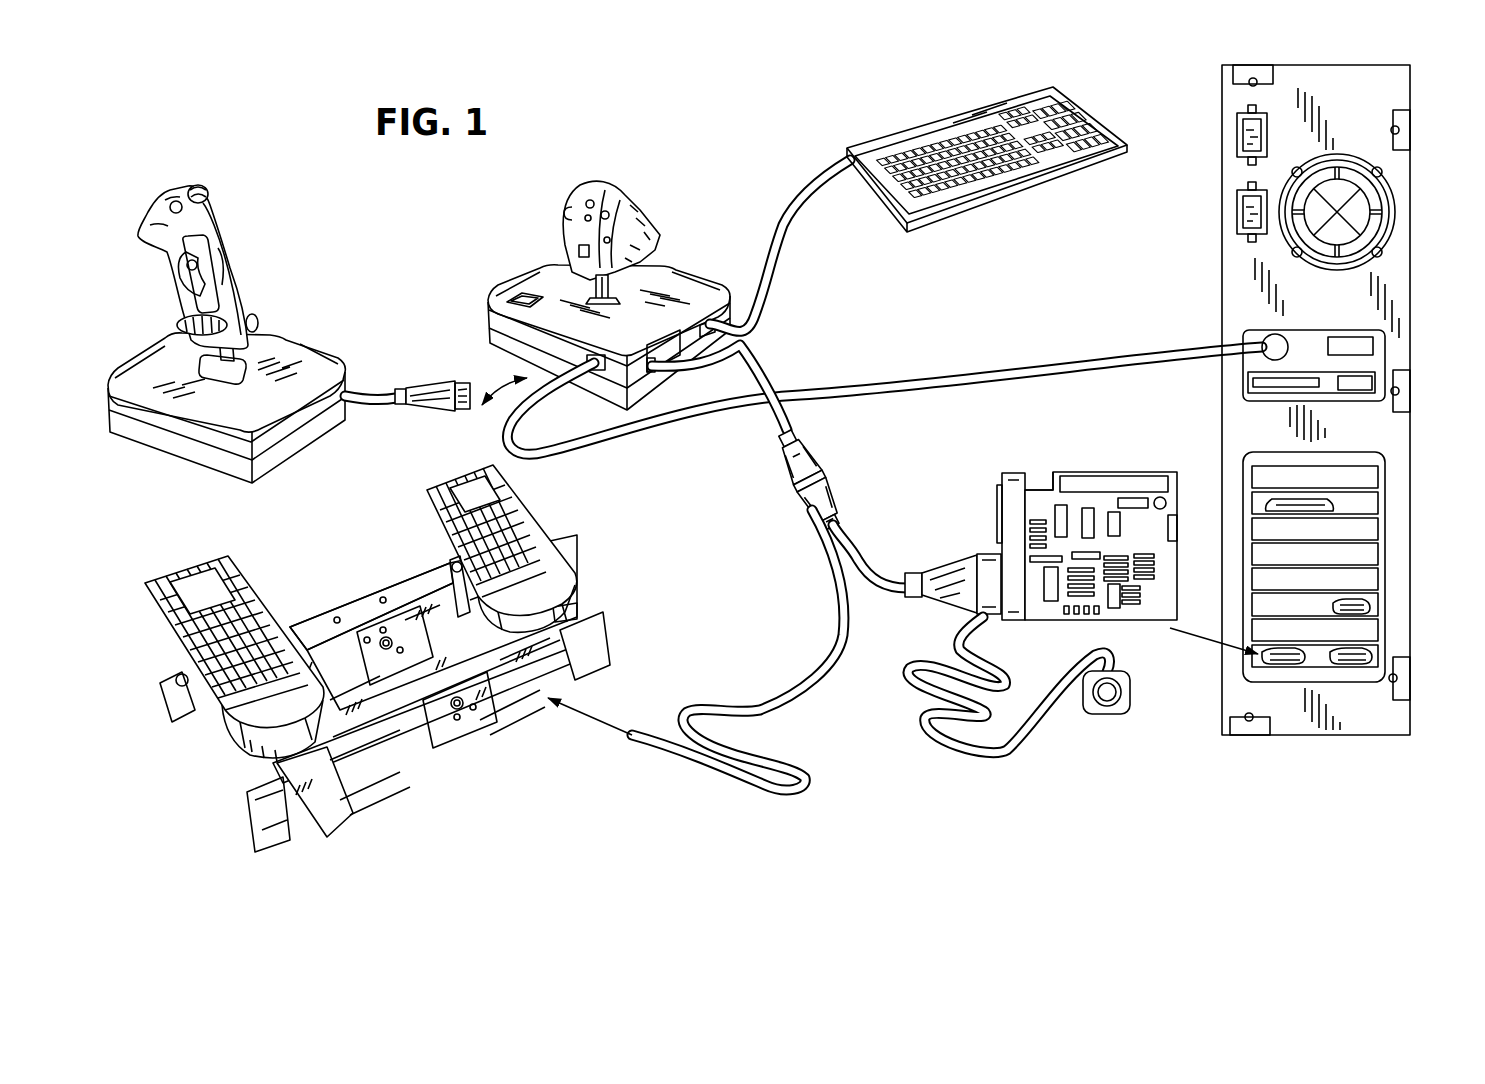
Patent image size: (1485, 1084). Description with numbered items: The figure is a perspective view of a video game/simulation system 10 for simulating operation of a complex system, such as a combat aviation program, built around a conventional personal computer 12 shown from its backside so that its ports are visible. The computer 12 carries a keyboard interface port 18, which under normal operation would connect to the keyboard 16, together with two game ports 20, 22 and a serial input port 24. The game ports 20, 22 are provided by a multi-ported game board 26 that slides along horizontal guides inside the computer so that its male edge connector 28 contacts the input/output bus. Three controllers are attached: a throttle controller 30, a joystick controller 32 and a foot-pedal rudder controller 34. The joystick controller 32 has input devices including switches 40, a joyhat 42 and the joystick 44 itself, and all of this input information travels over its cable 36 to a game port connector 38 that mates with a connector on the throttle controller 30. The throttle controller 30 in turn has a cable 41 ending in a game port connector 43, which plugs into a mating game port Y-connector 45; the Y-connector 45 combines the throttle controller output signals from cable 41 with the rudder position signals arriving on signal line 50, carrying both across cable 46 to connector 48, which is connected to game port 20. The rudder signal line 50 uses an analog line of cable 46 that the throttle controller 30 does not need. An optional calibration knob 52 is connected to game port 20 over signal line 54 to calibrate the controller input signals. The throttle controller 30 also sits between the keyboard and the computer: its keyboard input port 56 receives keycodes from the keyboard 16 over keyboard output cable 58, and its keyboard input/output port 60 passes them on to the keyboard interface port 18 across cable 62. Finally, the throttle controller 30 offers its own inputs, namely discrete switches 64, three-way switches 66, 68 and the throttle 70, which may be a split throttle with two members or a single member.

The video game/simulation system 10 is at (140, 558).
The personal computer 12 is at (1296, 737).
The keyboard 16 is at (948, 113).
The keyboard interface port 18 is at (1255, 340).
The game port 20 is at (952, 586).
The game port 22 is at (998, 514).
The serial input port 24 is at (1368, 607).
The multi-ported game board 26 is at (1042, 480).
The male edge connector 28 is at (1100, 474).
The throttle controller 30 is at (708, 279).
The joystick controller 32 is at (293, 340).
The foot-pedal rudder controller 34 is at (472, 756).
The cable 36 is at (374, 410).
The game port connector 38 is at (430, 386).
The switches 40 is at (176, 282).
The cable 41 is at (765, 370).
The joyhat 42 is at (212, 188).
The game port connector 43 is at (815, 455).
The joystick 44 is at (238, 278).
The game port Y-connector 45 is at (838, 495).
The cable 46 is at (870, 570).
The connector 48 is at (942, 600).
The signal line 50 is at (728, 780).
The calibration knob 52 is at (1103, 714).
The signal line 54 is at (966, 750).
The keyboard input port 56 is at (654, 376).
The keyboard output cable 58 is at (784, 245).
The keyboard input/output port 60 is at (594, 372).
The cable 62 is at (567, 448).
The discrete switches 64 is at (590, 200).
The three-way switch 66 is at (565, 213).
The three-way switch 68 is at (527, 296).
The throttle 70 is at (612, 282).